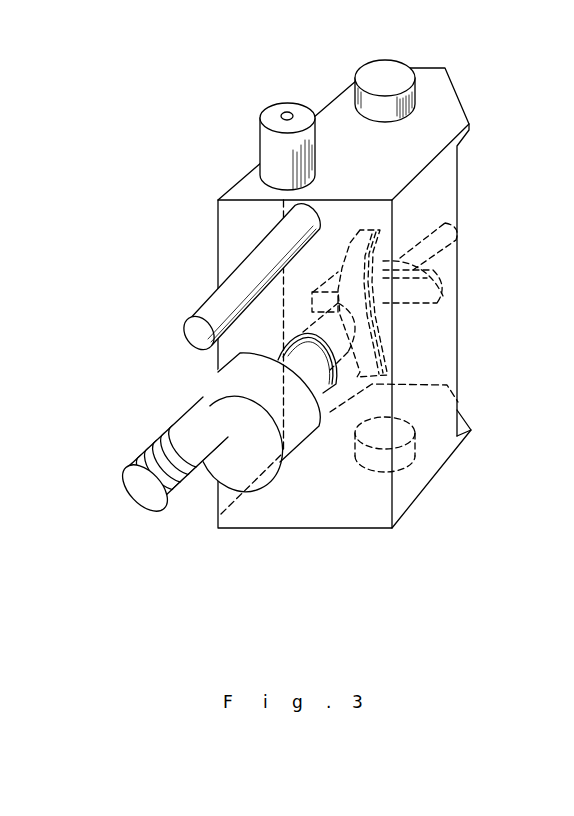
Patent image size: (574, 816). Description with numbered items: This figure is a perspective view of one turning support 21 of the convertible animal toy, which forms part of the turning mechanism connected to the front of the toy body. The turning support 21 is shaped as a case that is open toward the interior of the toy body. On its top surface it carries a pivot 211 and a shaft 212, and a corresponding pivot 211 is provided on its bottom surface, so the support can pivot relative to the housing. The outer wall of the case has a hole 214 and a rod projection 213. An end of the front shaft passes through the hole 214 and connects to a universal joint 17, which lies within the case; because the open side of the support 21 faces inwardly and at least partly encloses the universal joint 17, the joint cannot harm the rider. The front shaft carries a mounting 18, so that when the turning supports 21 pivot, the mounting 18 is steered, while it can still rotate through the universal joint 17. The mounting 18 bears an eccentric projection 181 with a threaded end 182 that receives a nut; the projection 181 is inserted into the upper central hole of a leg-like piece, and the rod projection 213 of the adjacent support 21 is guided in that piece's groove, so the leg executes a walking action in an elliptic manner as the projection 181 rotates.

The universal joint 17 is at (447, 292).
The mounting 18 is at (297, 460).
The projection 181 is at (207, 460).
The threaded end 182 is at (128, 466).
The turning support 21 is at (230, 231).
The pivot 211 is at (396, 70).
The shaft 212 is at (272, 112).
The rod projection 213 is at (186, 322).
The hole 214 is at (324, 400).